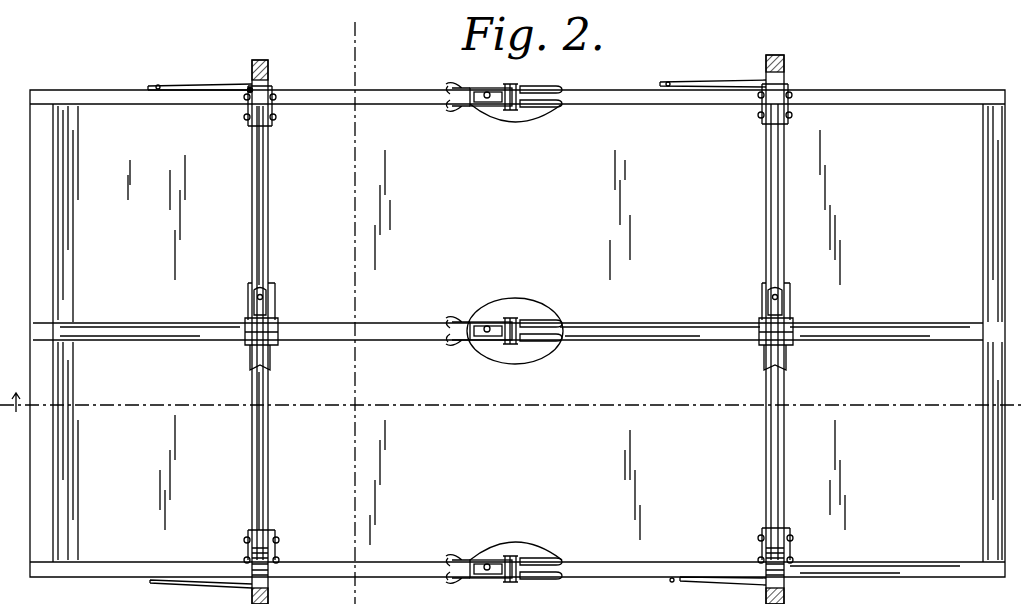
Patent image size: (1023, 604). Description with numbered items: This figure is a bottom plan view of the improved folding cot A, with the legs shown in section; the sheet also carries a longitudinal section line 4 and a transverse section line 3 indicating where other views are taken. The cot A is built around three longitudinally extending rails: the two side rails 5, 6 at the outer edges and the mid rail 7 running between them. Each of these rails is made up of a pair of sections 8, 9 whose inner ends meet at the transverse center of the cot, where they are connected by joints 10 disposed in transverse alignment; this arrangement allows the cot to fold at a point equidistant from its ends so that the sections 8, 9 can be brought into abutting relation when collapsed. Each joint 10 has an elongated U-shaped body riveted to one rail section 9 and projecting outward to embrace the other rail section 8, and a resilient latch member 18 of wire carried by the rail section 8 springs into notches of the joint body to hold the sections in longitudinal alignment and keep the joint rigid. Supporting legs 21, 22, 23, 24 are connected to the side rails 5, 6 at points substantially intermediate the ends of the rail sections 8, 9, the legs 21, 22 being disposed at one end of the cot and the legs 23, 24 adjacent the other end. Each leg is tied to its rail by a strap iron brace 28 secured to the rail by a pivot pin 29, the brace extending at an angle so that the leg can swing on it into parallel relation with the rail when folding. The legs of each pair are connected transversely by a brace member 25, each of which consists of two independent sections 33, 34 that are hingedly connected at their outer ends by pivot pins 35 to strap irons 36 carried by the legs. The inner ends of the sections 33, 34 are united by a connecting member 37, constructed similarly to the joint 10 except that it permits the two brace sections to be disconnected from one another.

The section line 3 is at (511, 411).
The section line 4 is at (348, 302).
The side rail 5 is at (104, 80).
The side rail 6 is at (122, 577).
The mid rail 7 is at (120, 340).
The rail section 8 is at (412, 328).
The rail section 9 is at (928, 322).
The joint 10 is at (545, 88).
The resilient latch member 18 is at (470, 83).
The supporting leg 21 is at (262, 60).
The supporting leg 22 is at (270, 597).
The supporting leg 23 is at (784, 64).
The supporting leg 24 is at (786, 592).
The brace member 25 is at (268, 205).
The strap iron brace 28 is at (722, 80).
The pivot pin 29 is at (220, 580).
The brace section 33 is at (270, 257).
The brace section 34 is at (270, 450).
The pivot pin 35 is at (275, 535).
The strap iron 36 is at (275, 555).
The connecting member 37 is at (275, 310).
The folding cot A is at (593, 120).